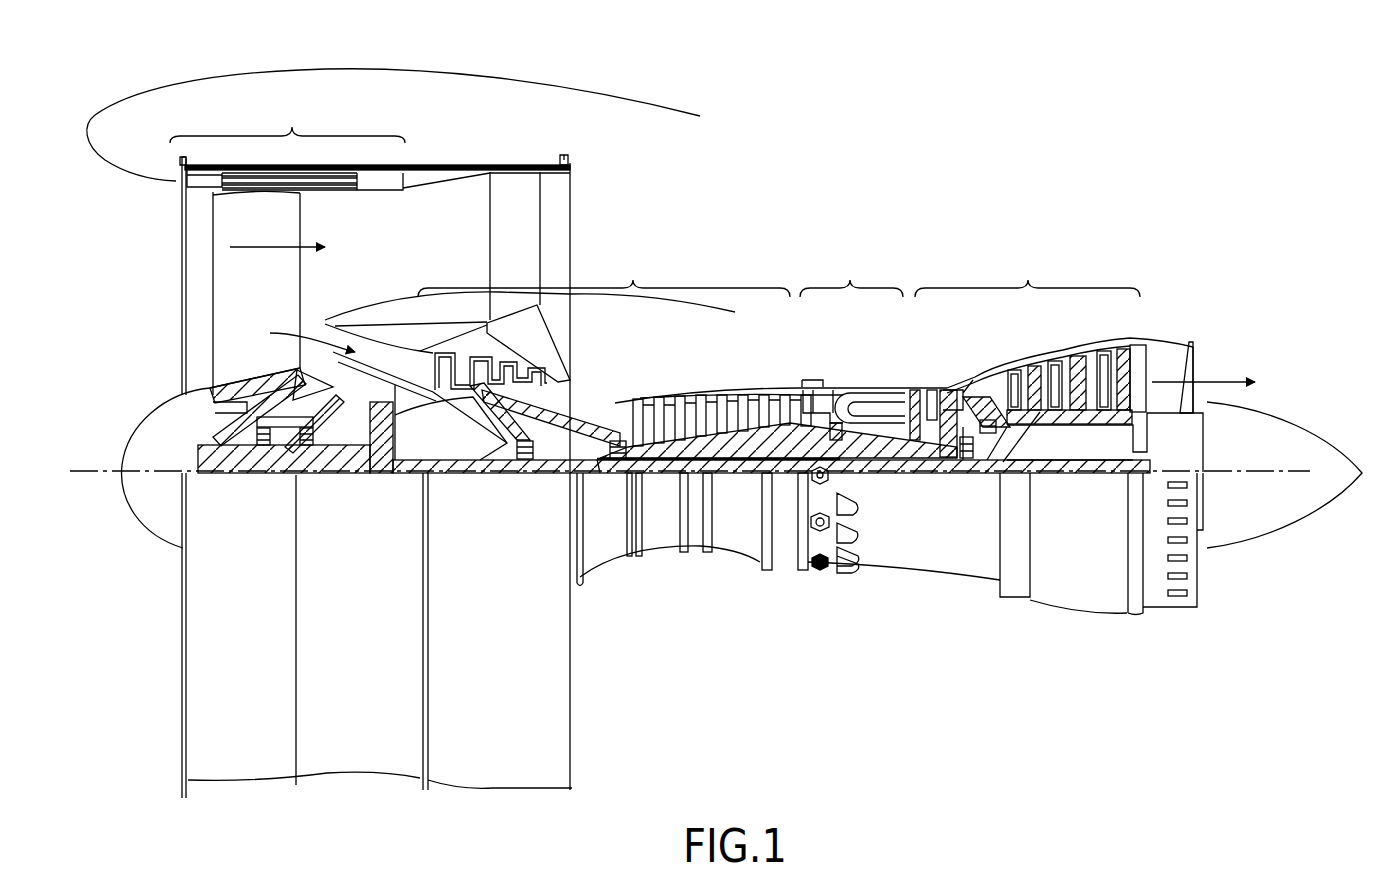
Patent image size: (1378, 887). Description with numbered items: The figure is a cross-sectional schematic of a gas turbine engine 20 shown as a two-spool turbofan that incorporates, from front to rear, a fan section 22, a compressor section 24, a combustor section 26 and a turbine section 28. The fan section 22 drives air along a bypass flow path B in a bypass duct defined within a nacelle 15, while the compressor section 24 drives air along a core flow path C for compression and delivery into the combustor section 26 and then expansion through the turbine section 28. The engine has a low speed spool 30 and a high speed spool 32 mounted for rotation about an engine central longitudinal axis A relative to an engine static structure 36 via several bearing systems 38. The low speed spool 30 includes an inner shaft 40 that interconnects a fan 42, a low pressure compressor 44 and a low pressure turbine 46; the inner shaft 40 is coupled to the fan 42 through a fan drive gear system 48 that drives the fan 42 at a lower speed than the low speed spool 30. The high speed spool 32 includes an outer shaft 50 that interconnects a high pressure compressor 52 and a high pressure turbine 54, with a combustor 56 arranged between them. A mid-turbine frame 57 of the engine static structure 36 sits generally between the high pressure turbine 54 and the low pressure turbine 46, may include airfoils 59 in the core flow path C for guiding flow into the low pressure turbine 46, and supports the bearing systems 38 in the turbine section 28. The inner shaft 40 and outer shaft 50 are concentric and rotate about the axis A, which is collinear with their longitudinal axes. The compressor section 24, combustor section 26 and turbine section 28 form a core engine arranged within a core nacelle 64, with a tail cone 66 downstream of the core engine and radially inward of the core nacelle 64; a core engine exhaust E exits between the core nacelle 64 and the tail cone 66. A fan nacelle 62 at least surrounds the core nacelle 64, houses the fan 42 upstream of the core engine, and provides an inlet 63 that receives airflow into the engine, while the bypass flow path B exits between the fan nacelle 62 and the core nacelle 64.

The gas turbine engine 20 is at (894, 174).
The fan section 22 is at (371, 445).
The compressor section 24 is at (604, 272).
The combustor section 26 is at (851, 272).
The turbine section 28 is at (1027, 272).
The nacelle 15 is at (372, 178).
The low speed spool 30 is at (740, 474).
The high speed spool 32 is at (795, 427).
The engine static structure 36 is at (787, 547).
The bearing systems 38 is at (527, 460).
The inner shaft 40 is at (595, 480).
The fan 42 is at (267, 285).
The low pressure compressor 44 is at (503, 366).
The low pressure turbine 46 is at (1070, 358).
The fan drive gear system 48 is at (384, 462).
The outer shaft 50 is at (863, 457).
The high pressure compressor 52 is at (740, 400).
The high pressure turbine 54 is at (932, 380).
The combustor 56 is at (873, 408).
The mid-turbine frame 57 is at (980, 368).
The airfoils 59 is at (993, 410).
The fan nacelle 62 is at (432, 80).
The inlet 63 is at (86, 128).
The core nacelle 64 is at (655, 300).
The tail cone 66 is at (1292, 422).
The engine central longitudinal axis A is at (1253, 470).
The bypass flow path B is at (265, 246).
The core flow path C is at (301, 336).
The core engine exhaust E is at (1220, 377).